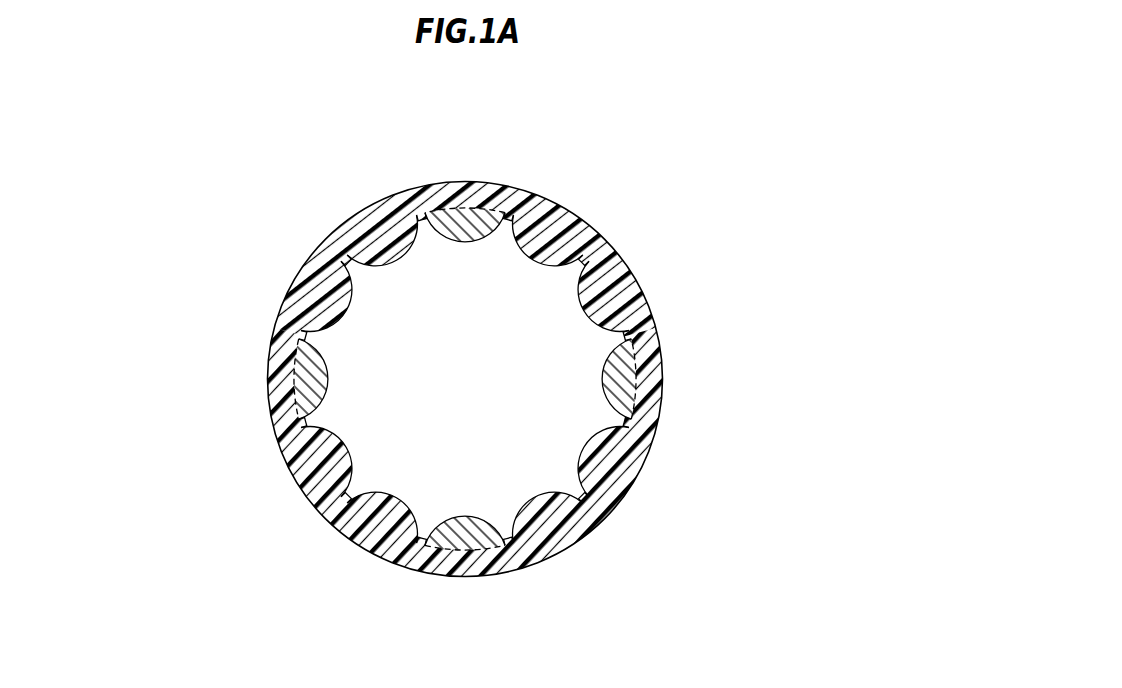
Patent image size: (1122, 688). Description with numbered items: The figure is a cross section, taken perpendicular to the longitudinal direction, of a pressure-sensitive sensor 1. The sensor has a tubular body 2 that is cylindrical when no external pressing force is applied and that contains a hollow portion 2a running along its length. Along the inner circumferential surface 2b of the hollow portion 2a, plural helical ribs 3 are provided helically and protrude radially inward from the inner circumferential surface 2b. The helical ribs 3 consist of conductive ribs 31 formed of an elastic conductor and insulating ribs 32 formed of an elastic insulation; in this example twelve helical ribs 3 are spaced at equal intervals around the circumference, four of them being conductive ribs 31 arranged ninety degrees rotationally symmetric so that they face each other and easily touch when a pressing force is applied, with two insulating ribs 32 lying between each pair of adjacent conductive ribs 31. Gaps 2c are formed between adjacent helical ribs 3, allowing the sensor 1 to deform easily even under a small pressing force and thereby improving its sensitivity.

The pressure-sensitive sensor 1 is at (305, 172).
The tubular body 2 is at (277, 352).
The hollow portion 2a is at (414, 395).
The inner circumferential surface 2b is at (344, 490).
The gap 2c is at (420, 535).
The helical rib 3 is at (603, 327).
The conductive rib 31 is at (452, 207).
The insulating rib 32 is at (542, 229).